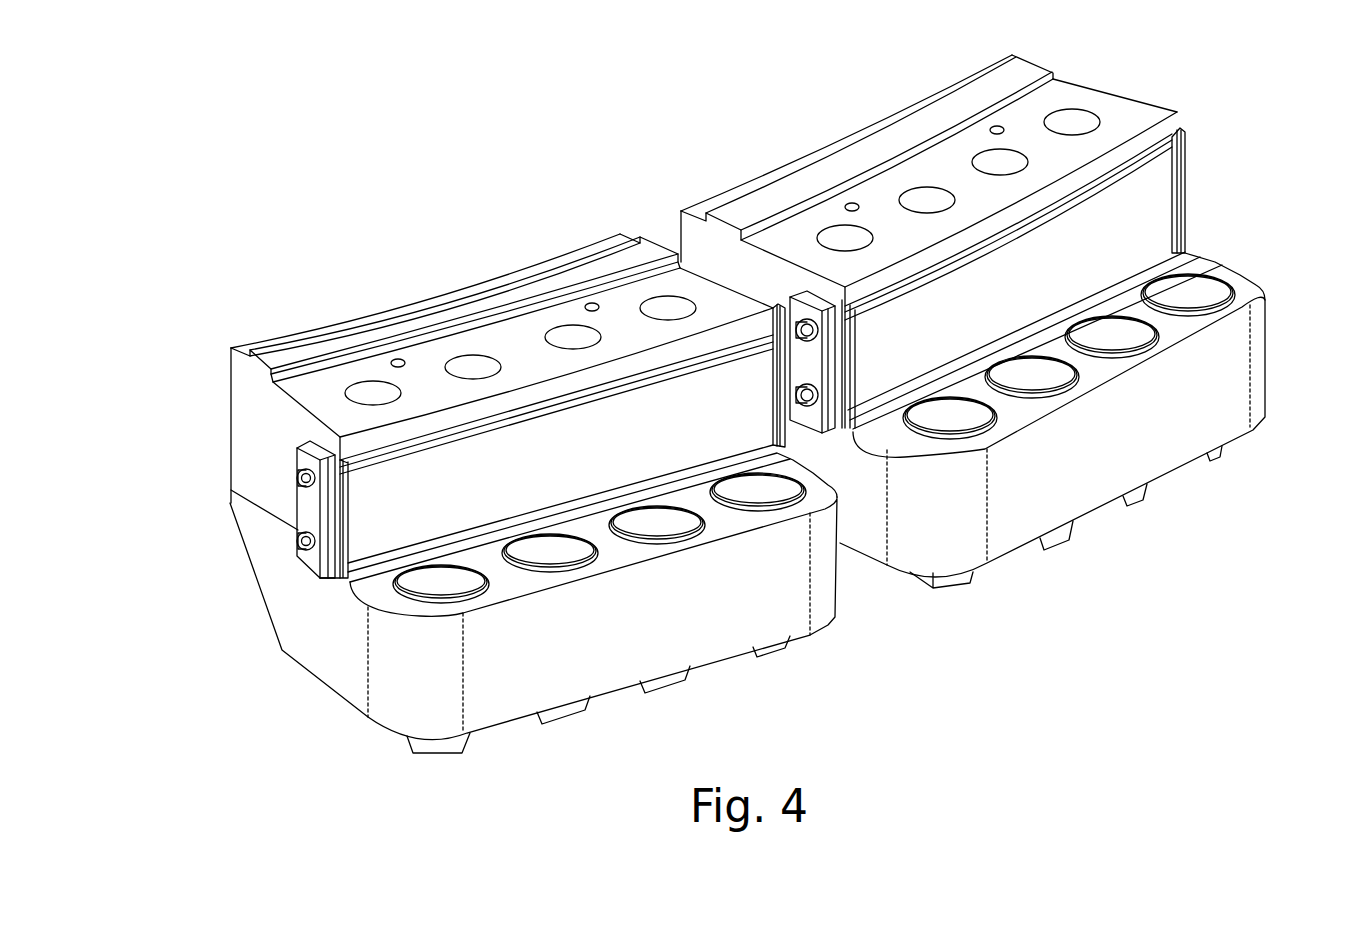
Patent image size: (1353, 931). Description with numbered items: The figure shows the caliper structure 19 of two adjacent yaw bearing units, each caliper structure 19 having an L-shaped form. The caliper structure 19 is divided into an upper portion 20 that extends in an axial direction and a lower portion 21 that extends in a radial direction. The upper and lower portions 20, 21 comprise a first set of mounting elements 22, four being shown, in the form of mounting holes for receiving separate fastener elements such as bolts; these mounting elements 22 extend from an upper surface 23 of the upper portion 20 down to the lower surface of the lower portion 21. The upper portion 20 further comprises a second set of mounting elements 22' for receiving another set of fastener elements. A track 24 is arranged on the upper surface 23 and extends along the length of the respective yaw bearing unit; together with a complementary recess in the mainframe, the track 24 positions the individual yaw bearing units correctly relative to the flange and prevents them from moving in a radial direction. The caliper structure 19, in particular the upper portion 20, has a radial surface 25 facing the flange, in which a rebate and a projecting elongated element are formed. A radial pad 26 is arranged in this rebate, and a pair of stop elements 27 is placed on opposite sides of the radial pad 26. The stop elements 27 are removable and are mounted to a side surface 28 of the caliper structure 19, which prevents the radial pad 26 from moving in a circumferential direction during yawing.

The caliper structure 19 is at (393, 222).
The upper portion 20 is at (247, 440).
The lower portion 21 is at (287, 616).
The first set of mounting elements 22 is at (748, 221).
The second set of mounting elements 22' is at (697, 204).
The upper surface 23 is at (510, 337).
The track 24 is at (347, 340).
The radial surface 25 is at (1150, 227).
The radial pad 26 is at (583, 473).
The stop elements 27 is at (300, 517).
The side surface 28 is at (247, 395).